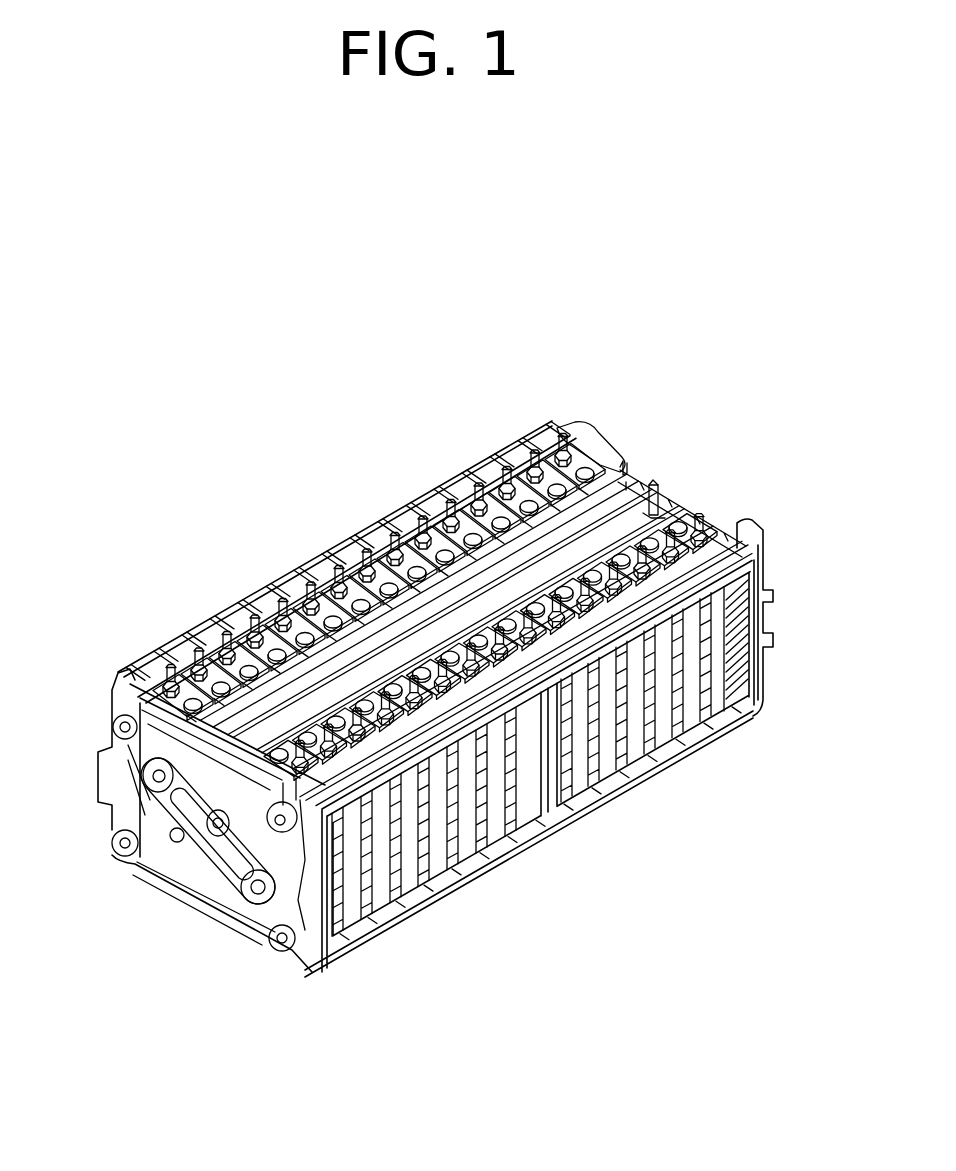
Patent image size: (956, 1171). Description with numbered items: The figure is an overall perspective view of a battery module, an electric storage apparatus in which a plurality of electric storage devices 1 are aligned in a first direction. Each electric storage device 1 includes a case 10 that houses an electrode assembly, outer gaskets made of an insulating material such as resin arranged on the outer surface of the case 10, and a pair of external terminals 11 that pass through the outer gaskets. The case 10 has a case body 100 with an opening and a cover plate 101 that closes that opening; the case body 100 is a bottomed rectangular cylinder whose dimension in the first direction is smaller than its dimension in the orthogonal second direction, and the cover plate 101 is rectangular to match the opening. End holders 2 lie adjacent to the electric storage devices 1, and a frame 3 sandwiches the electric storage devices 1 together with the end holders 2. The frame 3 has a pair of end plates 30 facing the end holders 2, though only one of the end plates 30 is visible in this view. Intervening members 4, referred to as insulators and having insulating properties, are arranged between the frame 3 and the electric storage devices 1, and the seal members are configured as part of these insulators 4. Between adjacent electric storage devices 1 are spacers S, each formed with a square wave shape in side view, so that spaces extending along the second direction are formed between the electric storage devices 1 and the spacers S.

The electric storage device 1 is at (607, 740).
The end holder 2 is at (730, 644).
The frame 3 is at (113, 676).
The intervening member 4 is at (373, 508).
The case 10 is at (726, 550).
The external terminal 11 is at (563, 448).
The end plate 30 is at (192, 830).
The case body 100 is at (762, 598).
The cover plate 101 is at (693, 468).
The spacer S is at (458, 808).